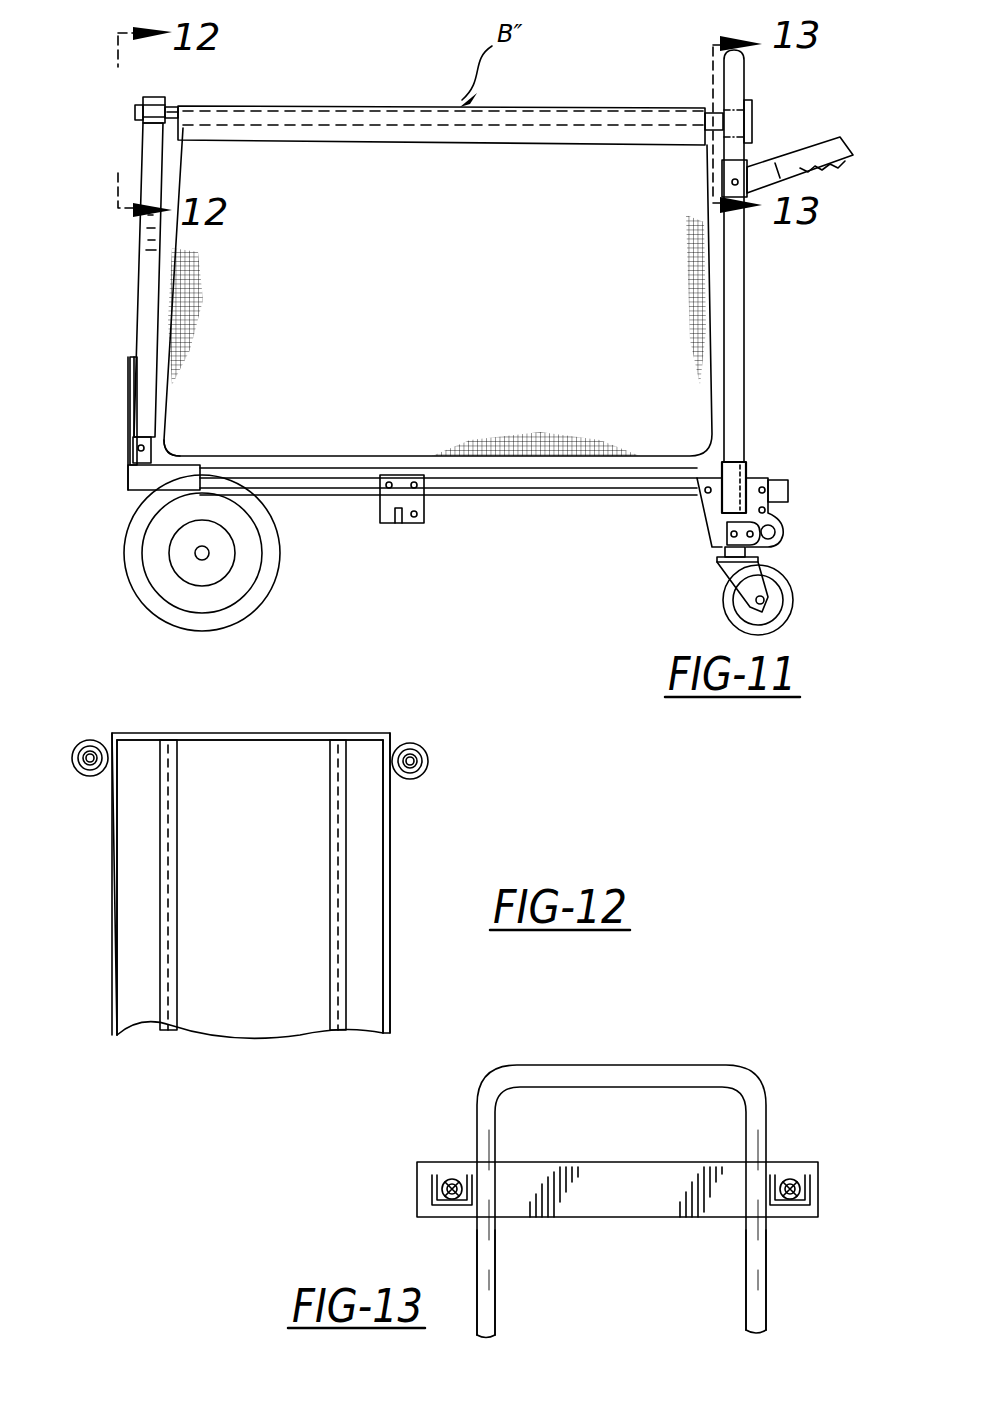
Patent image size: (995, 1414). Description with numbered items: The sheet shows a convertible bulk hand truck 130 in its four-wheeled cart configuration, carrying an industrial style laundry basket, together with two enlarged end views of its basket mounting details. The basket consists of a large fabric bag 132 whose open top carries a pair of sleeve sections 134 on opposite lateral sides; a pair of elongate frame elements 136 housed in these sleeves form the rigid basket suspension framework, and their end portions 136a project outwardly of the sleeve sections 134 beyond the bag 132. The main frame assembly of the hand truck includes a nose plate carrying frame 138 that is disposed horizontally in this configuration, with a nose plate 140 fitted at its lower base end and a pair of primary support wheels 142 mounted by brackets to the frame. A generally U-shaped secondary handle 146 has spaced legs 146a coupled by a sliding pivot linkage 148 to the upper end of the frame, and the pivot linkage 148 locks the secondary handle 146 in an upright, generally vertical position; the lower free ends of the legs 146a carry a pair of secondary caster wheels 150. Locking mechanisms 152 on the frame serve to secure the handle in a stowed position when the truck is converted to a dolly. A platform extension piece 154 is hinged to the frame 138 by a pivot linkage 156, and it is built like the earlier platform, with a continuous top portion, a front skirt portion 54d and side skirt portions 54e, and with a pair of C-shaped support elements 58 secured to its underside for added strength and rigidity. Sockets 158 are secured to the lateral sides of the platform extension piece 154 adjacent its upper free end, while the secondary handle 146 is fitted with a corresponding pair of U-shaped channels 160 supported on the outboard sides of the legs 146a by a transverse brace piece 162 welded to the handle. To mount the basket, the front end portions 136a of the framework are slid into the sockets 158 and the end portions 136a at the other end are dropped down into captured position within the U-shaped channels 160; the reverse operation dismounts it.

In FIG. 11, the convertible bulk hand truck 130 is at (112, 292).
In FIG. 11, the fabric bag 132 is at (688, 325).
In FIG. 11, the sleeve sections 134 is at (572, 122).
In FIG. 11, the elongate frame elements 136 is at (185, 103).
In FIG. 11, the end portions 136a is at (182, 115).
In FIG. 12, the end portions 136a is at (90, 770).
In FIG. 13, the end portions 136a is at (452, 1180).
In FIG. 11, the nose plate carrying frame 138 is at (646, 508).
In FIG. 11, the nose plate 140 is at (118, 457).
In FIG. 11, the primary support wheels 142 is at (282, 572).
In FIG. 11, the secondary handle 146 is at (765, 298).
In FIG. 13, the secondary handle 146 is at (760, 1062).
In FIG. 13, the legs 146a is at (488, 1270).
In FIG. 11, the sliding pivot linkage 148 is at (762, 468).
In FIG. 11, the secondary caster wheels 150 is at (795, 600).
In FIG. 11, the locking mechanisms 152 is at (434, 512).
In FIG. 11, the platform extension piece 154 is at (175, 262).
In FIG. 12, the platform extension piece 154 is at (145, 725).
In FIG. 11, the pivot linkage 156 is at (183, 456).
In FIG. 11, the sockets 158 is at (130, 110).
In FIG. 12, the sockets 158 is at (75, 748).
In FIG. 11, the U-shaped channels 160 is at (760, 120).
In FIG. 13, the U-shaped channels 160 is at (432, 1188).
In FIG. 11, the transverse brace piece 162 is at (755, 148).
In FIG. 13, the transverse brace piece 162 is at (612, 1163).
In FIG. 12, the C-shaped support elements 58 is at (182, 775).
In FIG. 12, the front skirt portion 54d is at (248, 740).
In FIG. 12, the side skirt portions 54e is at (114, 864).